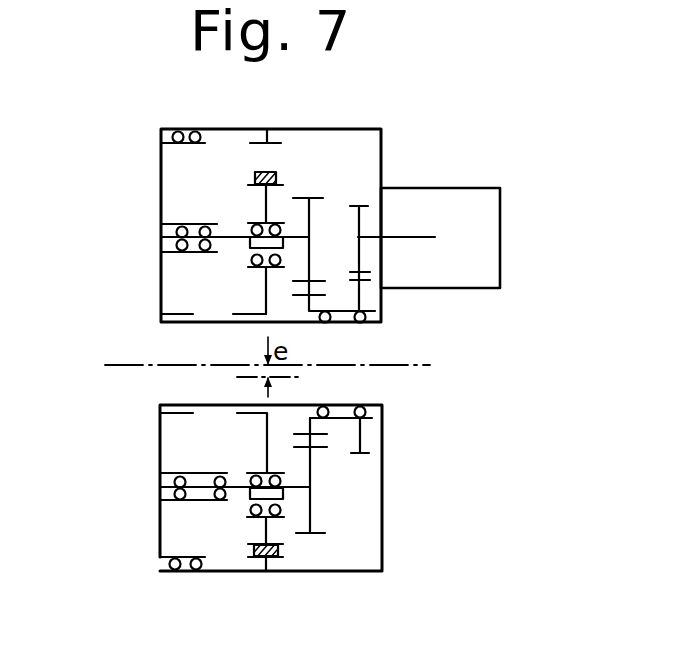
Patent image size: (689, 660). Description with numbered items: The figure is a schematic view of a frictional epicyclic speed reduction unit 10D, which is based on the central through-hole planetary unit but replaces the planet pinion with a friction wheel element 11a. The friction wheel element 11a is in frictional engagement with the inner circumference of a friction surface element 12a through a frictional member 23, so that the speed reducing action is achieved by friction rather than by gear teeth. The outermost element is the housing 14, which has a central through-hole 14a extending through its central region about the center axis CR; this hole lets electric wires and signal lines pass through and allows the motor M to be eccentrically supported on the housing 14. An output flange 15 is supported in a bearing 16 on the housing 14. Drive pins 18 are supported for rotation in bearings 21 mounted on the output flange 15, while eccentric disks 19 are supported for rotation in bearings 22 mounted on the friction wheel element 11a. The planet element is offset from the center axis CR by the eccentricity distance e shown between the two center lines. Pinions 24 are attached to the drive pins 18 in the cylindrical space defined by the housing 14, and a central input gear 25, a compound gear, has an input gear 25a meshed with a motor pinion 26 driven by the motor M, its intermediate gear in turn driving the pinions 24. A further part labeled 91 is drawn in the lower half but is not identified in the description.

The frictional epicyclic speed reduction unit 10D is at (143, 278).
The output flange 15 is at (161, 200).
The bearing 16 is at (170, 136).
The friction surface element 12a is at (273, 150).
The frictional member 23 is at (258, 172).
The bearings 22 is at (246, 223).
The bearings 21 is at (190, 223).
The eccentric disks 19 is at (250, 246).
The friction wheel element 11a is at (308, 217).
The pinions 24 is at (280, 192).
The motor pinion 26 is at (357, 222).
The motor M is at (480, 188).
The center axis CR is at (395, 360).
The housing 14 is at (247, 571).
The central through-hole 14a is at (373, 405).
The input gear 25a is at (362, 434).
The central input gear 25 is at (340, 422).
The drive pins 18 is at (294, 488).
The shaft 91 is at (249, 492).